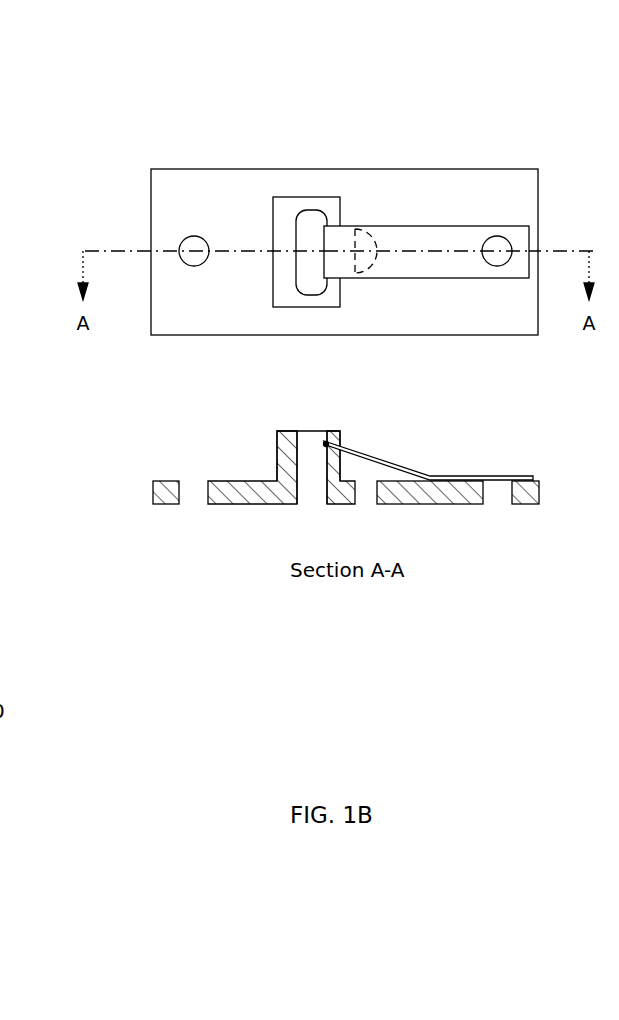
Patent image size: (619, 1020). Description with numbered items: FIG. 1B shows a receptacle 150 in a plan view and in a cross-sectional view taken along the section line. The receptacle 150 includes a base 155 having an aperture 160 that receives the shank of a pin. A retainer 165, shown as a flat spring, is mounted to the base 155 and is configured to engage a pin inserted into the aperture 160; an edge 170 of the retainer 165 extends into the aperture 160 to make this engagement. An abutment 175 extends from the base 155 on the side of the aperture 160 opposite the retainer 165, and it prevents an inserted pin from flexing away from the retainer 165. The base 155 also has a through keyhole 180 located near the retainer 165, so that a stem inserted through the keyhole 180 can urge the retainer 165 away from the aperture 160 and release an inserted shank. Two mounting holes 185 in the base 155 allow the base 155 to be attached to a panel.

The receptacle 150 is at (185, 85).
The base 155 is at (342, 169).
The aperture 160 is at (308, 210).
The retainer 165 is at (408, 278).
The edge 170 is at (325, 445).
The abutment 175 is at (277, 448).
The keyhole 180 is at (375, 232).
The mounting holes 185 is at (197, 267).